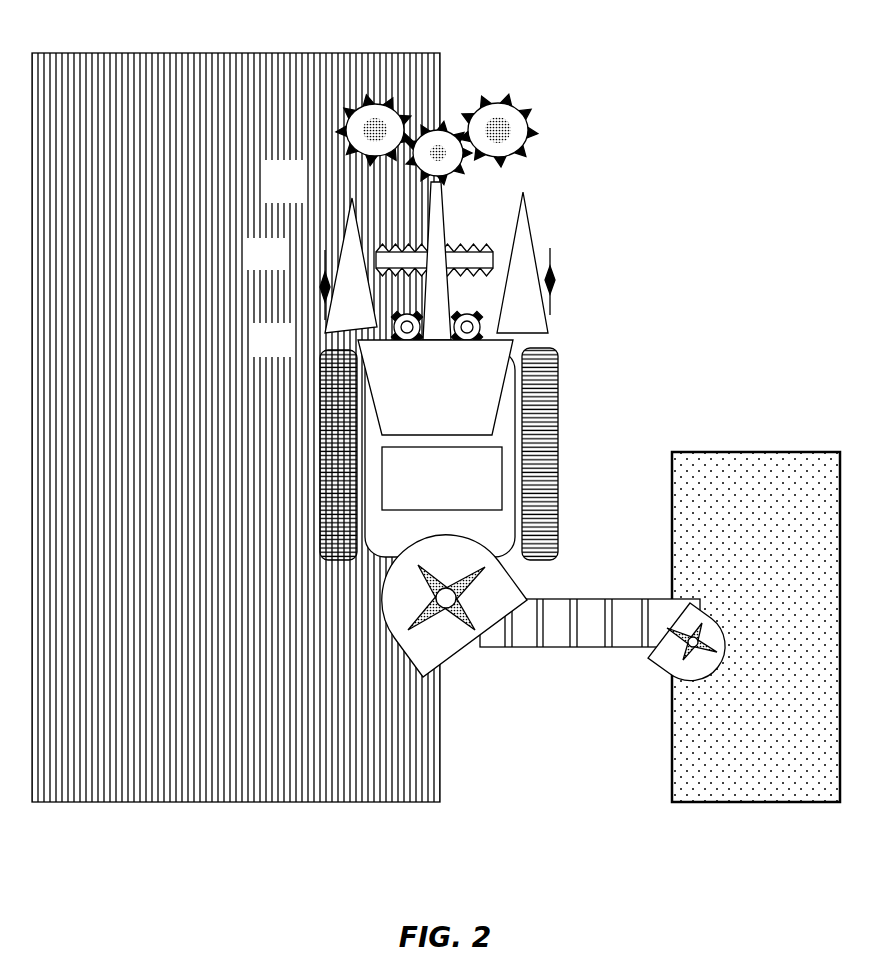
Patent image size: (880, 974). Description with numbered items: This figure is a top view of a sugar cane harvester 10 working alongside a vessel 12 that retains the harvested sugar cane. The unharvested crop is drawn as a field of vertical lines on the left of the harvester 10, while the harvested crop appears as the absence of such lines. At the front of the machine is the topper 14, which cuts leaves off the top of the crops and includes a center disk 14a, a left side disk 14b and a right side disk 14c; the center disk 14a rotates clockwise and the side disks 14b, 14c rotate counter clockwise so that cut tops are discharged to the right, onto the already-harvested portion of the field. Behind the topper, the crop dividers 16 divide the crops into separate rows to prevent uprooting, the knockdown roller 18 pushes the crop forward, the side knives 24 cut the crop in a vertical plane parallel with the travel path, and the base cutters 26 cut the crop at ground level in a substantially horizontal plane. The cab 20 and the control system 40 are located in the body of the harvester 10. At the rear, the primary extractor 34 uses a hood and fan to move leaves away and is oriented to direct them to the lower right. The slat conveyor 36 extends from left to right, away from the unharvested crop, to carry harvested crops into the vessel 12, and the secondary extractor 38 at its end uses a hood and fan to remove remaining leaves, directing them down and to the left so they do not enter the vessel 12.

The sugar cane harvester 10 is at (633, 313).
The vessel 12 is at (740, 460).
The topper 14 is at (473, 95).
The center disk 14a is at (440, 133).
The left side disk 14b is at (377, 110).
The right side disk 14c is at (525, 117).
The crop dividers 16 is at (350, 237).
The knockdown roller 18 is at (473, 250).
The cab 20 is at (447, 397).
The side knives 24 is at (322, 268).
The base cutters 26 is at (393, 328).
The primary extractor 34 is at (443, 633).
The conveyor 36 is at (563, 628).
The secondary extractor 38 is at (668, 653).
The control system 40 is at (447, 488).